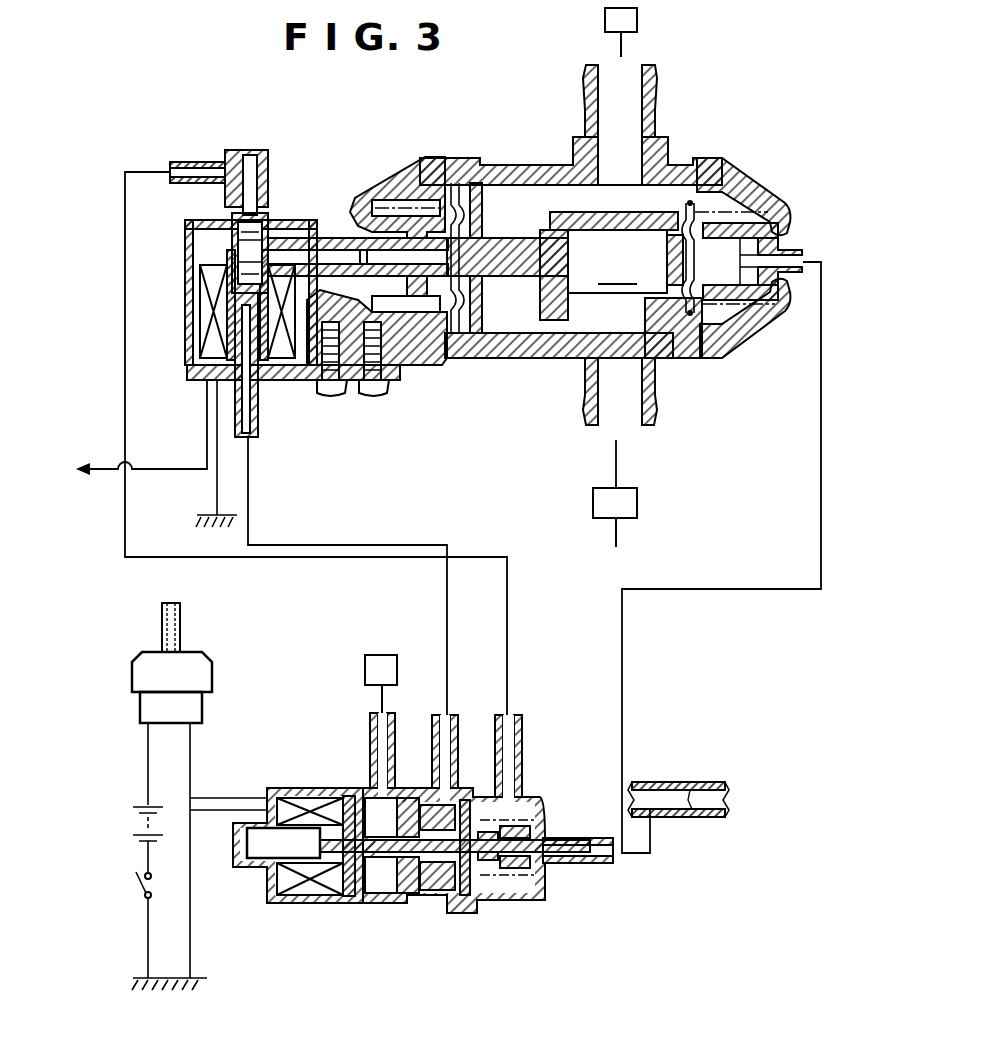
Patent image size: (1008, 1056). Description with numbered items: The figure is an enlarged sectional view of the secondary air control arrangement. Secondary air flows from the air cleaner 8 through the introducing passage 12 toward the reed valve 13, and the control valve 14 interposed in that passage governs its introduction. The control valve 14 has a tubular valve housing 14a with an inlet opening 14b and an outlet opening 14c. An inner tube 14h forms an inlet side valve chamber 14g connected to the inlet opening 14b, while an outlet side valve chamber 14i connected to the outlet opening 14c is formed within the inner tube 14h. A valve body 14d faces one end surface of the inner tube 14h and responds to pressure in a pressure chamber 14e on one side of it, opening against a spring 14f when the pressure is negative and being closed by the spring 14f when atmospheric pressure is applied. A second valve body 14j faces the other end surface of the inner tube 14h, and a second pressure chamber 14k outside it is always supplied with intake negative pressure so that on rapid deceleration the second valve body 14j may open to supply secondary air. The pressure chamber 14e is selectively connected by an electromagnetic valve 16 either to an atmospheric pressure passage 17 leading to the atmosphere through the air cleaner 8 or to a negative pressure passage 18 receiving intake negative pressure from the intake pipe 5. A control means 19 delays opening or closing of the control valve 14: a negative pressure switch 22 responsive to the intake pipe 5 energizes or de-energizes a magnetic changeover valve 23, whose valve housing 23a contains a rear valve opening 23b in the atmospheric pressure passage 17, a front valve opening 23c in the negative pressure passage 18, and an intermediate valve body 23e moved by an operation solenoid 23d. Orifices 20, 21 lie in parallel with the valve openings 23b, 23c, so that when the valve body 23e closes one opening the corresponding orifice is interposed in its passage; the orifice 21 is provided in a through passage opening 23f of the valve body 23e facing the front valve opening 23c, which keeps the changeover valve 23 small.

The intake pipe 5 is at (676, 786).
The air cleaner 8 is at (606, 28).
The introducing passage 12 is at (654, 390).
The reed valve 13 is at (637, 503).
The control valve 14 is at (556, 108).
The valve housing 14a is at (481, 358).
The inlet opening 14b is at (635, 72).
The outlet opening 14c is at (633, 412).
The valve body 14d is at (547, 212).
The pressure chamber 14e is at (410, 185).
The spring 14f is at (373, 207).
The inlet side valve chamber 14g is at (503, 197).
The inner tube 14h is at (643, 215).
The outlet side valve chamber 14i is at (617, 261).
The second valve body 14j is at (695, 240).
The second pressure chamber 14k is at (737, 318).
The electromagnetic valve 16 is at (223, 308).
The atmospheric pressure passage 17 is at (305, 560).
The negative pressure passage 18 is at (330, 545).
The control means 19 is at (544, 681).
The orifice 20 is at (403, 798).
The orifice 21 is at (525, 846).
The negative pressure switch 22 is at (204, 676).
The changeover valve 23 is at (530, 803).
The valve housing 23a is at (361, 903).
The rear valve opening 23b is at (424, 895).
The front valve opening 23c is at (526, 870).
The operation solenoid 23d is at (303, 800).
The valve body 23e is at (442, 902).
The through passage opening 23f is at (497, 862).